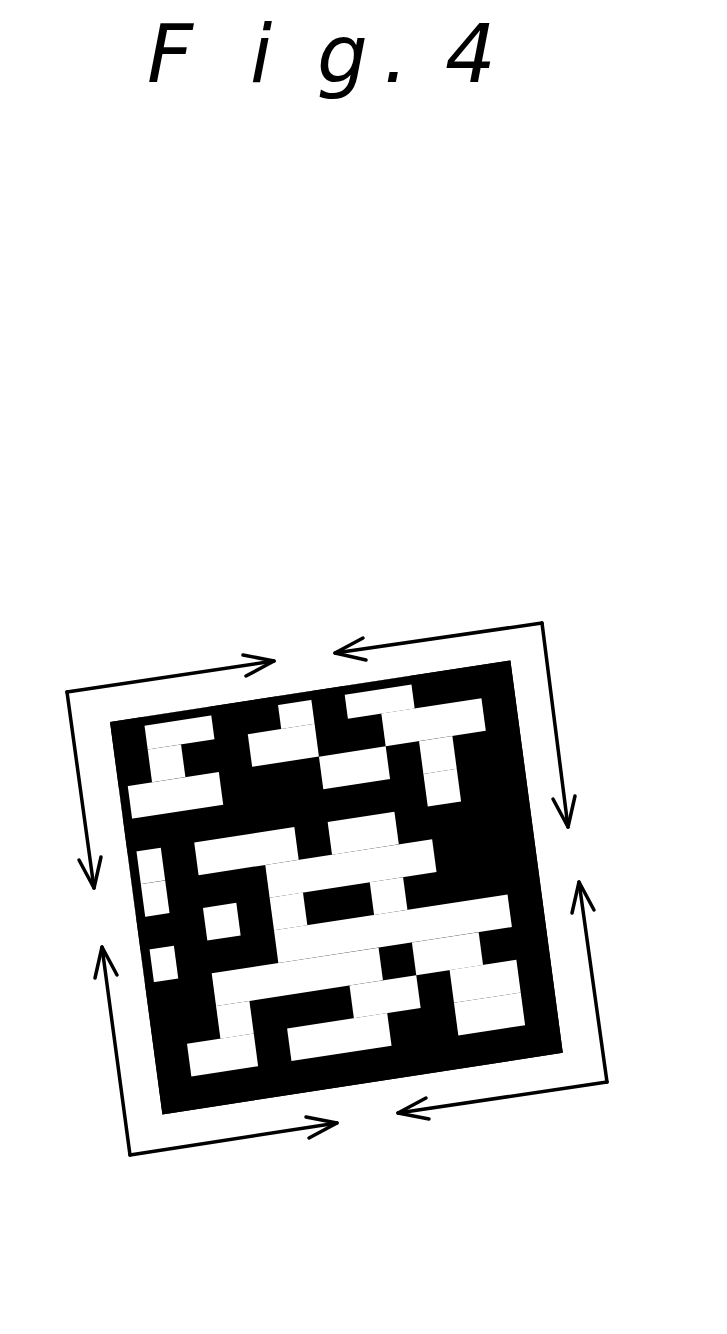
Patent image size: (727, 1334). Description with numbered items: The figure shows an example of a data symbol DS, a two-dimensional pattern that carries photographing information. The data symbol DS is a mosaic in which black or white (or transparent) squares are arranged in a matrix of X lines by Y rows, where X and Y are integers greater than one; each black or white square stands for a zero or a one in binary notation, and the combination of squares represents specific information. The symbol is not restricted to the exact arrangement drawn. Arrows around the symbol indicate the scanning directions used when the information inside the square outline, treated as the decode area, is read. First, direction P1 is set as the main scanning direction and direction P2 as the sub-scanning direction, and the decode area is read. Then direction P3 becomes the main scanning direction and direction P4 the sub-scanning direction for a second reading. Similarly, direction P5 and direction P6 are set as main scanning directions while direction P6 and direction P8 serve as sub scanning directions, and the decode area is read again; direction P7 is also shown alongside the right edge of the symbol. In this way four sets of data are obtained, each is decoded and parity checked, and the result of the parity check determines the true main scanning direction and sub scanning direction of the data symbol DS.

The data symbol DS is at (276, 588).
The direction P1 is at (170, 647).
The direction P2 is at (56, 790).
The direction P3 is at (91, 1051).
The direction P4 is at (233, 1167).
The direction P5 is at (502, 1129).
The direction P6 is at (619, 982).
The direction P7 is at (583, 725).
The direction P8 is at (438, 616).